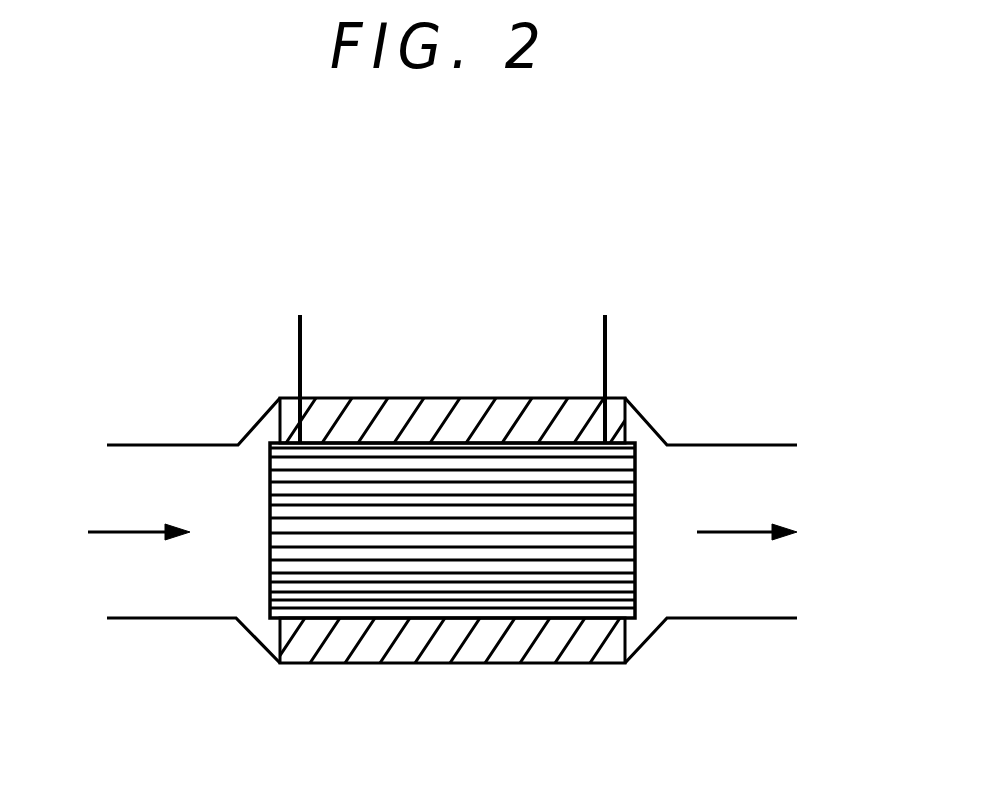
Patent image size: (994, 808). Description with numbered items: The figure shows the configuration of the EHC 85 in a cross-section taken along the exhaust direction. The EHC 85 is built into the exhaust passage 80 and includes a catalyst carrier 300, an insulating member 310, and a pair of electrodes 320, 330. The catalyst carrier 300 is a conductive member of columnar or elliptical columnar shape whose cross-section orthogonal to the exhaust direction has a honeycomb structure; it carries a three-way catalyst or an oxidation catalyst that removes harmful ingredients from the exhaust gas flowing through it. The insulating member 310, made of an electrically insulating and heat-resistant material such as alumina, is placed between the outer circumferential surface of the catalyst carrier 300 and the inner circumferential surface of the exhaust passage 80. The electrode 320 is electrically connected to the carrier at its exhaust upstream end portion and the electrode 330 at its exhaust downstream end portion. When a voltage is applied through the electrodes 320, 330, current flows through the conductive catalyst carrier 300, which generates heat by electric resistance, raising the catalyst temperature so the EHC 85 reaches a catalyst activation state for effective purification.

The EHC 85 is at (125, 234).
The exhaust passage 80 is at (172, 619).
The catalyst carrier 300 is at (635, 578).
The insulating member 310 is at (501, 654).
The electrode 320 is at (298, 326).
The electrode 330 is at (607, 337).